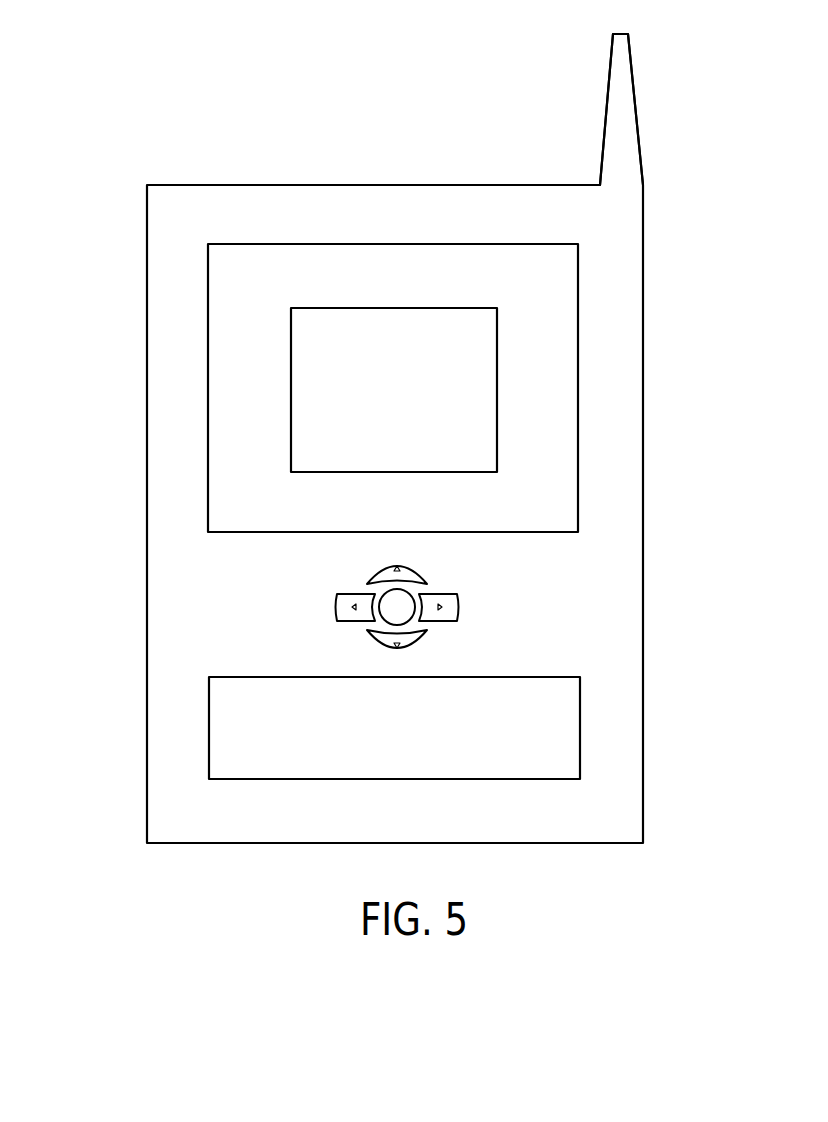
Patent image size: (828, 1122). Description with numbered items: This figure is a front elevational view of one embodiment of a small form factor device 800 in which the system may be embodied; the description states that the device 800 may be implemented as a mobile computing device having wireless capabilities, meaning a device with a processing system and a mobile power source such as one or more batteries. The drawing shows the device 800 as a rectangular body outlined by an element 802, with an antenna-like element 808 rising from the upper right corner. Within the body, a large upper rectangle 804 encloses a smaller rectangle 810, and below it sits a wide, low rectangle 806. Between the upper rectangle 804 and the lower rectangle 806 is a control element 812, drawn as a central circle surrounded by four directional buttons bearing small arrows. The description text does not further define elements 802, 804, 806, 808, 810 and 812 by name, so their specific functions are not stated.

The small form factor device 800 is at (148, 131).
The housing 802 is at (146, 597).
The display 804 is at (580, 298).
The keypad panel 806 is at (580, 727).
The antenna 808 is at (605, 108).
The display window 810 is at (395, 307).
The navigation pad 812 is at (487, 608).